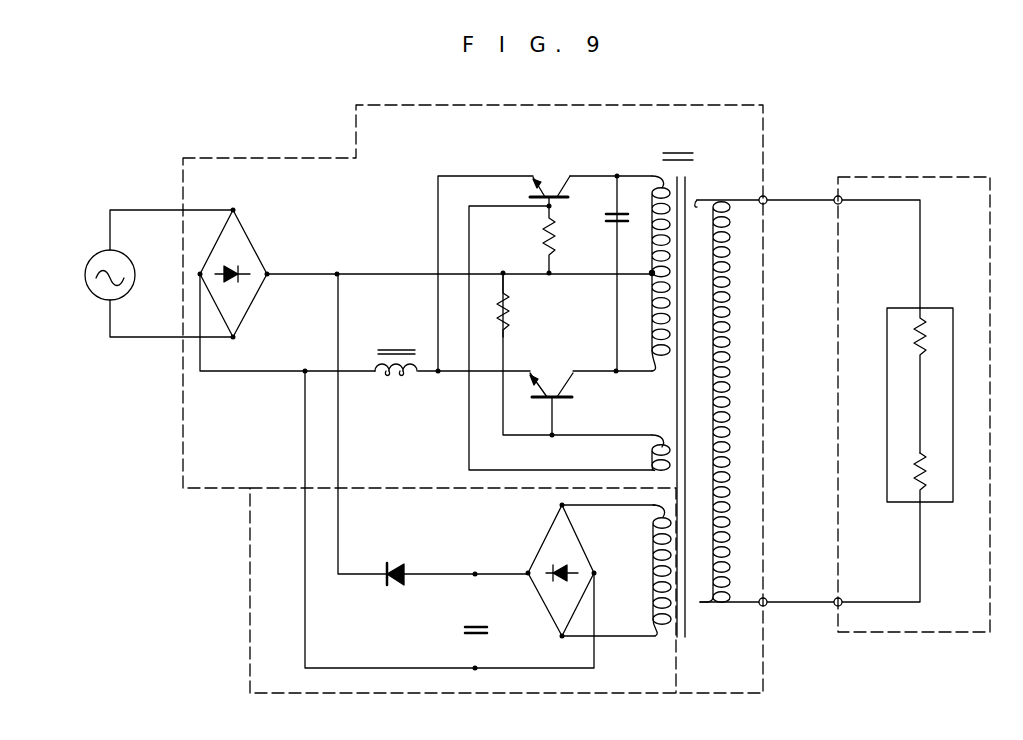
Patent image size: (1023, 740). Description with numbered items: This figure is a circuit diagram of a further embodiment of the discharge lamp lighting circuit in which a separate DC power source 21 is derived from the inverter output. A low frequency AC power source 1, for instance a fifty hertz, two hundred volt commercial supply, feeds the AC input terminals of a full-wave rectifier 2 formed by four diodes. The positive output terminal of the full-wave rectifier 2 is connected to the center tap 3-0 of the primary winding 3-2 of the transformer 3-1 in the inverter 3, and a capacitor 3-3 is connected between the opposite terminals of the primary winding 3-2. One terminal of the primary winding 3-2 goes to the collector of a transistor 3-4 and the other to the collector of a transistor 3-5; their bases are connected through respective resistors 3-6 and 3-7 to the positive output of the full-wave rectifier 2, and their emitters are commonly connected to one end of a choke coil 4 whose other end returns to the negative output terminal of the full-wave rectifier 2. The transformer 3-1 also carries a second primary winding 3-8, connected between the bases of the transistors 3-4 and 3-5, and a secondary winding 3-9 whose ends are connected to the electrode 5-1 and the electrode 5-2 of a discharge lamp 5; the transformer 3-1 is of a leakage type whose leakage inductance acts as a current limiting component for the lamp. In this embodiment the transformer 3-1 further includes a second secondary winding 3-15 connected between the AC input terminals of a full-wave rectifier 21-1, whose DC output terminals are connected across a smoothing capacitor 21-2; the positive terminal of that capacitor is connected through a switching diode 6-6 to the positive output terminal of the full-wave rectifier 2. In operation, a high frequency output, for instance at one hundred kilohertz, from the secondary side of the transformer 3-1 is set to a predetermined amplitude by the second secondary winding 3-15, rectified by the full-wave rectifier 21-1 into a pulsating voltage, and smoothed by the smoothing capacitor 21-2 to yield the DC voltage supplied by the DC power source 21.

The low frequency AC power source 1 is at (85, 272).
The full-wave rectifier 2 is at (248, 242).
The inverter 3 is at (390, 105).
The choke coil 4 is at (390, 348).
The transformer 3-1 is at (681, 154).
The primary winding 3-2 is at (654, 184).
The capacitor 3-3 is at (610, 226).
The transistor 3-4 is at (562, 184).
The transistor 3-5 is at (548, 388).
The resistor 3-6 is at (540, 234).
The resistor 3-7 is at (513, 304).
The second primary winding 3-8 is at (646, 440).
The secondary winding 3-9 is at (706, 200).
The center tap 3-0 is at (652, 275).
The second secondary winding 3-15 is at (658, 636).
The discharge lamp 5 is at (951, 380).
The electrode 5-1 is at (924, 330).
The electrode 5-2 is at (925, 478).
The switching diode 6-6 is at (409, 565).
The DC power source 21 is at (504, 693).
The full-wave rectifier 21-1 is at (546, 595).
The smoothing capacitor 21-2 is at (483, 639).